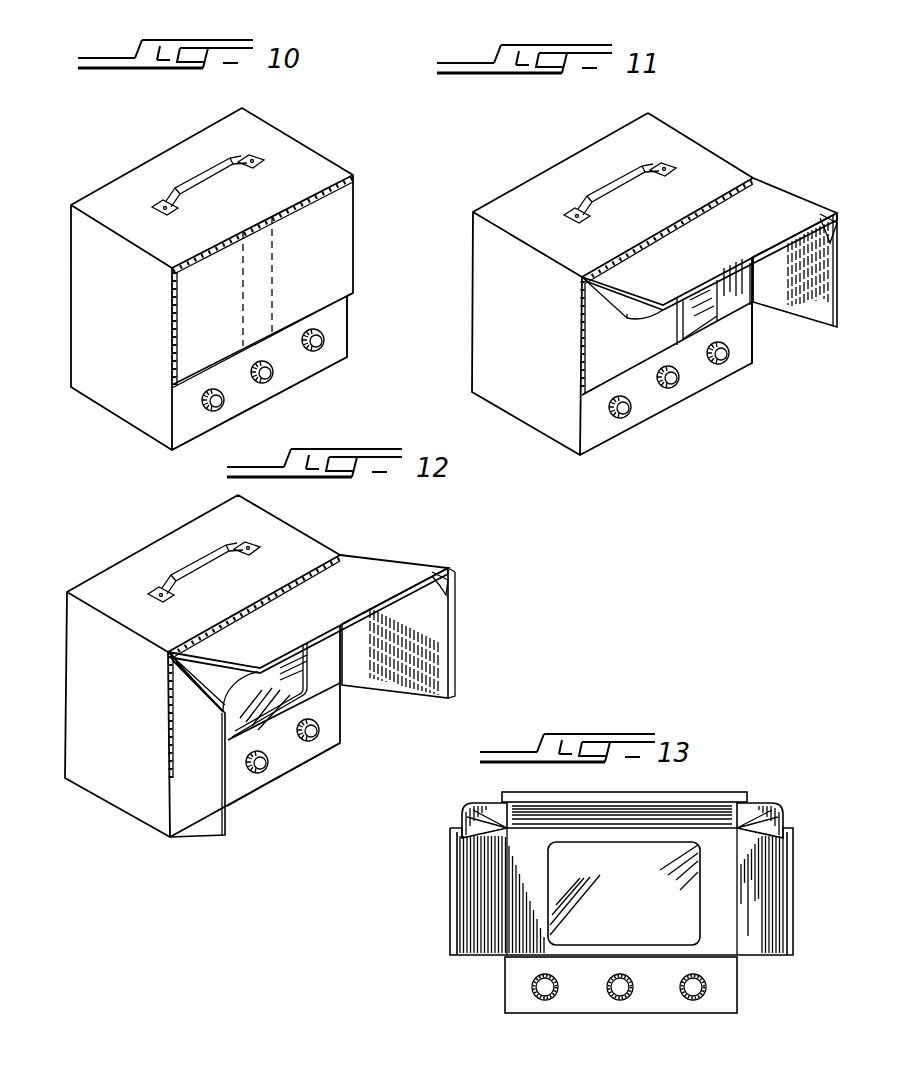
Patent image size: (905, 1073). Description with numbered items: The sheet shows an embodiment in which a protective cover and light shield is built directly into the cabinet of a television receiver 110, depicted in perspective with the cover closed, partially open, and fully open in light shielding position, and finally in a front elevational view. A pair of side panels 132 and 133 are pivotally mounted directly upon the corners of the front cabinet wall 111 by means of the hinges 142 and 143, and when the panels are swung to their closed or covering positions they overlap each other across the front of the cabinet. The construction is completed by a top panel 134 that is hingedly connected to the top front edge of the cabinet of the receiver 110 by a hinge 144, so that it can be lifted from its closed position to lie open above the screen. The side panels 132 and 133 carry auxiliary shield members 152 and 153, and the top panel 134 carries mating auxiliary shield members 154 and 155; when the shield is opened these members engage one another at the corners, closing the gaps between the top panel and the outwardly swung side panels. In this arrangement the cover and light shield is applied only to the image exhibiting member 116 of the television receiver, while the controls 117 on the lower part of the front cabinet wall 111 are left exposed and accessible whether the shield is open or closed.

In FIG. 10, the television receiver 110 is at (300, 126).
In FIG. 10, the front cabinet wall 111 is at (250, 400).
In FIG. 11, the front cabinet wall 111 is at (598, 437).
In FIG. 12, the front cabinet wall 111 is at (242, 787).
In FIG. 11, the image exhibiting member 116 is at (693, 317).
In FIG. 12, the image exhibiting member 116 is at (340, 693).
In FIG. 13, the image exhibiting member 116 is at (640, 903).
In FIG. 10, the controls 117 is at (270, 377).
In FIG. 11, the controls 117 is at (720, 360).
In FIG. 12, the controls 117 is at (260, 772).
In FIG. 13, the controls 117 is at (545, 1000).
In FIG. 11, the side panel 132 is at (590, 352).
In FIG. 12, the side panel 132 is at (205, 800).
In FIG. 13, the side panel 132 is at (472, 913).
In FIG. 11, the side panel 133 is at (775, 303).
In FIG. 12, the side panel 133 is at (433, 648).
In FIG. 13, the side panel 133 is at (760, 943).
In FIG. 10, the top panel 134 is at (340, 235).
In FIG. 11, the top panel 134 is at (720, 261).
In FIG. 12, the top panel 134 is at (318, 618).
In FIG. 13, the top panel 134 is at (692, 813).
In FIG. 10, the hinge 142 is at (168, 312).
In FIG. 11, the hinge 143 is at (753, 276).
In FIG. 10, the hinge 144 is at (218, 245).
In FIG. 12, the auxiliary shield member 152 is at (210, 686).
In FIG. 13, the auxiliary shield member 152 is at (468, 818).
In FIG. 12, the auxiliary shield member 153 is at (450, 581).
In FIG. 13, the auxiliary shield member 153 is at (768, 830).
In FIG. 12, the auxiliary shield member 154 is at (202, 664).
In FIG. 13, the auxiliary shield member 154 is at (487, 808).
In FIG. 12, the auxiliary shield member 155 is at (405, 563).
In FIG. 13, the auxiliary shield member 155 is at (762, 808).